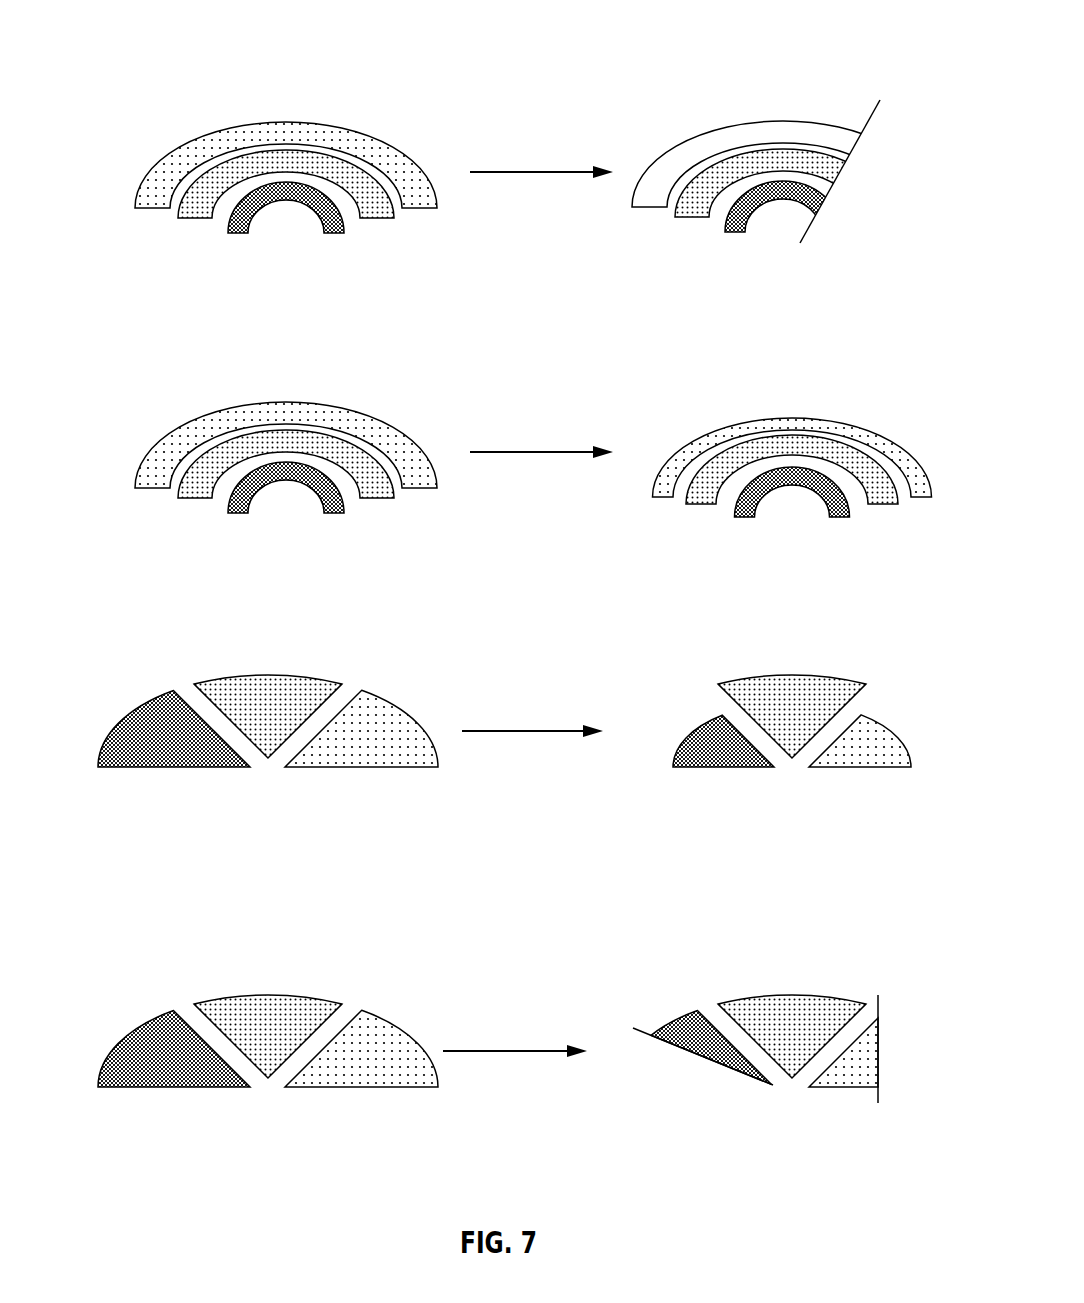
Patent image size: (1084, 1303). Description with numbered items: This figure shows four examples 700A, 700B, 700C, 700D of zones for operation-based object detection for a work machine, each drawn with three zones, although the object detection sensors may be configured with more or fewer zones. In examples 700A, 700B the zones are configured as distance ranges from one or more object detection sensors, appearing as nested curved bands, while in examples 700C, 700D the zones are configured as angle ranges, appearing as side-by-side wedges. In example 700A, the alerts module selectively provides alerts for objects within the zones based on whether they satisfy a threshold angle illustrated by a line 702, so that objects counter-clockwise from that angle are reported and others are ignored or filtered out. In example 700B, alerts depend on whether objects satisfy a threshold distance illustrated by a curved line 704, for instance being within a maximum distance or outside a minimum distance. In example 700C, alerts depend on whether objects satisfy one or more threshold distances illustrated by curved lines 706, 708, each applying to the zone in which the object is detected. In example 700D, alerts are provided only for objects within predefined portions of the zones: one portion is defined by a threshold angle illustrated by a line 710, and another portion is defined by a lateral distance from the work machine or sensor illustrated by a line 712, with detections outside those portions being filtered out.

The example 700A is at (152, 70).
The example 700B is at (495, 405).
The example 700C is at (502, 665).
The example 700D is at (501, 993).
The line illustrating threshold angle 702 is at (833, 190).
The curved line illustrating threshold distance 704 is at (825, 420).
The curved line illustrating threshold distance 706 is at (720, 722).
The curved line illustrating threshold distance 708 is at (863, 722).
The line illustrating threshold angle 710 is at (642, 1028).
The line illustrating lateral distance 712 is at (880, 1007).